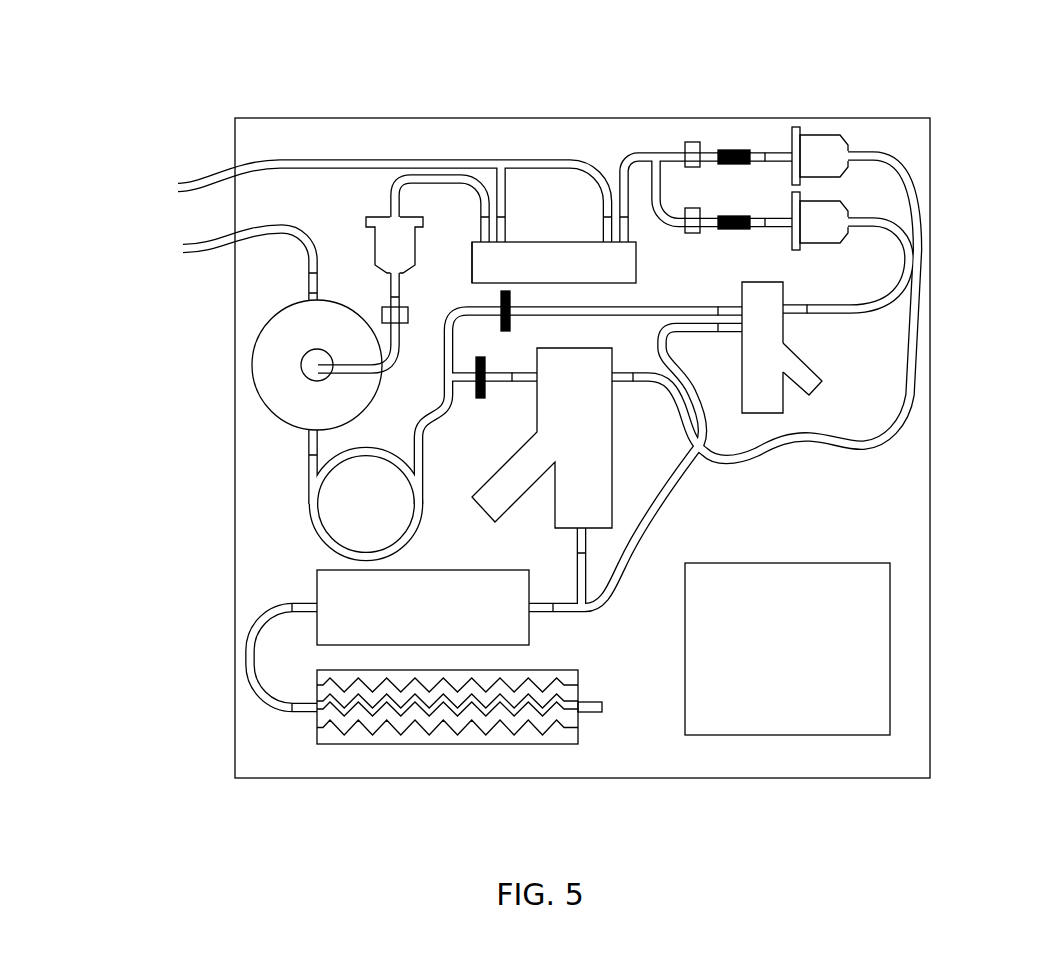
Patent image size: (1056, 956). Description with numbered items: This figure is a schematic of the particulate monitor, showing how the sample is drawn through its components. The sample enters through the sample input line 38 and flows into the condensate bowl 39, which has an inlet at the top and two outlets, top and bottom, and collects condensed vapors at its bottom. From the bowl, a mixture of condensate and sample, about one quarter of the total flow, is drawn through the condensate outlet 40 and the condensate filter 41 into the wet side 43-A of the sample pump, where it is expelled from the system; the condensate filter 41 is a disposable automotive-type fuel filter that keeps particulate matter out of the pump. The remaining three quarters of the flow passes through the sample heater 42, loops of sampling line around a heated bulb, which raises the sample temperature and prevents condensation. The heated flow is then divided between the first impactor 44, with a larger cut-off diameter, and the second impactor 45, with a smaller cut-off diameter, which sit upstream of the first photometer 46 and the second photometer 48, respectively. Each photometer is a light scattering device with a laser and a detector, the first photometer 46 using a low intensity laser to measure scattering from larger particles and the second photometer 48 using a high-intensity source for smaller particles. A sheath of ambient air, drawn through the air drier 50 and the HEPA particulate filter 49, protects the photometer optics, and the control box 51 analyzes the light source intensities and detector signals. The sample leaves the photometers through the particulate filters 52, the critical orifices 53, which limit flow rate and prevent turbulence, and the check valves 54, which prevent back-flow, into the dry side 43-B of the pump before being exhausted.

The sample input line 38 is at (168, 247).
The condensate bowl 39 is at (250, 367).
The condensate outlet 40 is at (298, 376).
The condensate filter 41 is at (363, 250).
The sample heater 42 is at (300, 521).
The wet side of sample pump 43-A is at (477, 267).
The dry side of sample pump 43-B is at (610, 257).
The first impactor 44 is at (498, 357).
The second impactor 45 is at (515, 292).
The first photometer 46 is at (820, 351).
The second photometer 48 is at (628, 447).
The particulate filter 49 is at (547, 585).
The air drier 50 is at (588, 683).
The control box 51 is at (898, 583).
The particulate filters 52 is at (858, 126).
The critical orifices 53 is at (735, 138).
The check valves 54 is at (375, 317).